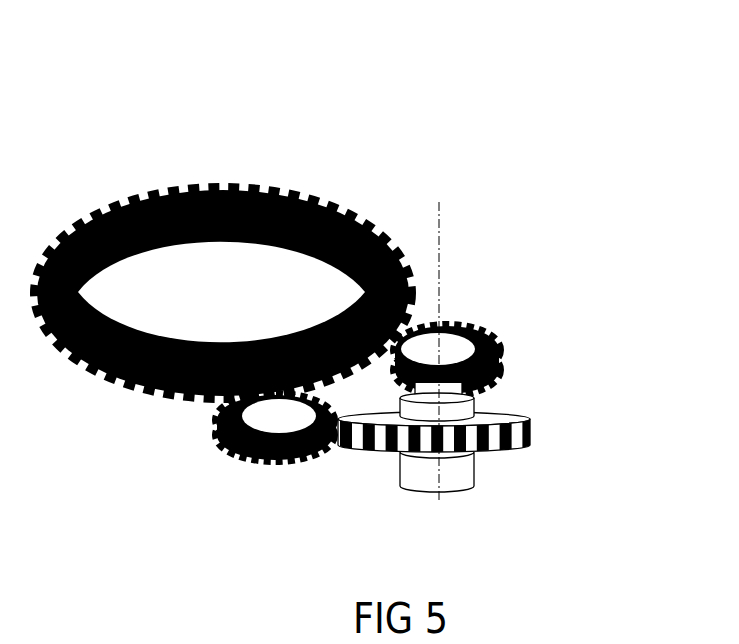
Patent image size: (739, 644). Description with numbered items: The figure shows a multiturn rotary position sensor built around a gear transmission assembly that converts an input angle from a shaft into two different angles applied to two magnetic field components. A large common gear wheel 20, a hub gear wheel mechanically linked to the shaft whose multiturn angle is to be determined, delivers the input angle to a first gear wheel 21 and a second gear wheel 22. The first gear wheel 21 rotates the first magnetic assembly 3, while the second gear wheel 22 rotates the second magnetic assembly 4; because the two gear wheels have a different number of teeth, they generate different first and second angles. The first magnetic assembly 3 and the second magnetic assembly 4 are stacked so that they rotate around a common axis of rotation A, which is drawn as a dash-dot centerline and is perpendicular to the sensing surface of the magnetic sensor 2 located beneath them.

The common gear wheel 20 is at (337, 210).
The first gear wheel 21 is at (480, 345).
The second gear wheel 22 is at (223, 428).
The first magnetic assembly 3 is at (473, 402).
The second magnetic assembly 4 is at (492, 452).
The magnetic sensor 2 is at (453, 490).
The common axis of rotation A is at (440, 350).